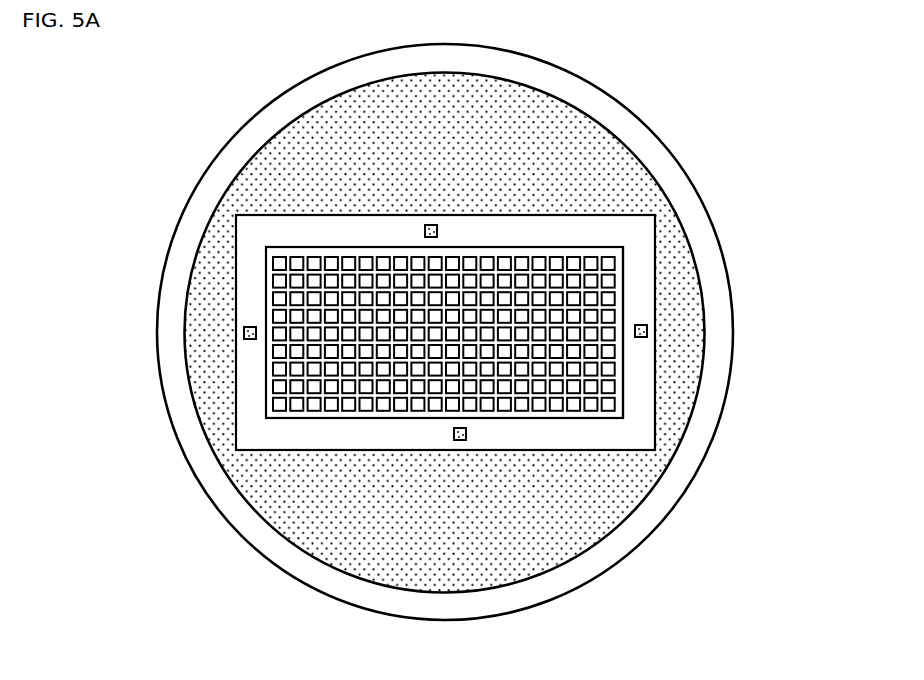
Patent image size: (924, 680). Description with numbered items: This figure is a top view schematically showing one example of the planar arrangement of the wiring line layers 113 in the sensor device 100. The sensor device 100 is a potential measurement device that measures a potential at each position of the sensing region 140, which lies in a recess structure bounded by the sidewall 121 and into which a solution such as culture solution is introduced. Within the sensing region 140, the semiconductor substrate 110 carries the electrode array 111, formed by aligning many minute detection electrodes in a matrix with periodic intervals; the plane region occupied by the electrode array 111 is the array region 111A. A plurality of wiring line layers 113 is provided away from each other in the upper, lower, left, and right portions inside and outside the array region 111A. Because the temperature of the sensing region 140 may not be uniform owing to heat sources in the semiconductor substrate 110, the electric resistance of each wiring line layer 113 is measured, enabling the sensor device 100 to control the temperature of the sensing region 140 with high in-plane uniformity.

The sensor device 100 is at (723, 112).
The sidewall 121 is at (710, 245).
The sensing region 140 is at (577, 510).
The semiconductor substrate 110 is at (647, 393).
The electrode array 111 is at (593, 365).
The array region 111A is at (628, 308).
The wiring line layer 113 is at (425, 228).